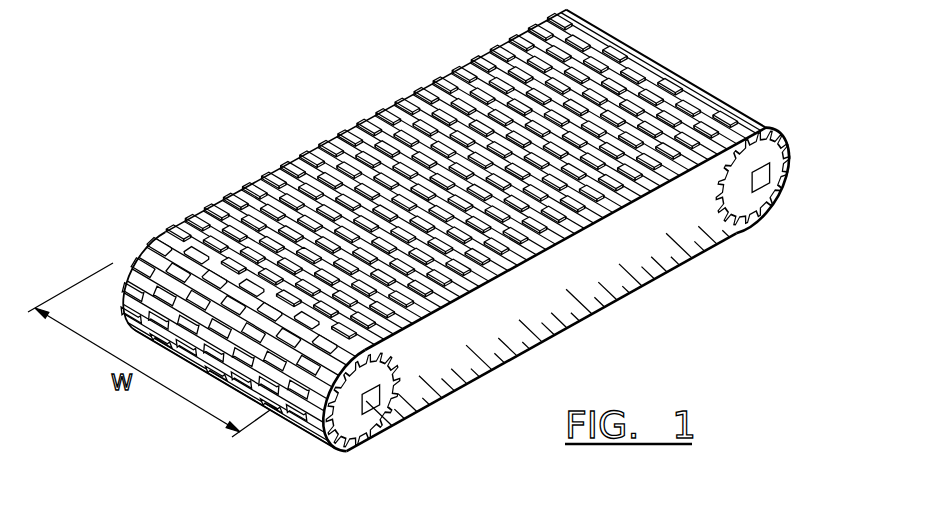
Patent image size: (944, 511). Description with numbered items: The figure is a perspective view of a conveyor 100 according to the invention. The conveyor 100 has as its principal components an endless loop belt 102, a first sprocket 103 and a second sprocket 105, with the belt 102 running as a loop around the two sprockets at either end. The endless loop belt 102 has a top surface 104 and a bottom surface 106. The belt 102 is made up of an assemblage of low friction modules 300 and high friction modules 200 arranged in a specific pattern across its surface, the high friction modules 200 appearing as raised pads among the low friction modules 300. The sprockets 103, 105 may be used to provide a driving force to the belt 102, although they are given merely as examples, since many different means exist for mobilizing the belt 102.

The conveyor 100 is at (236, 149).
The endless loop belt 102 is at (566, 343).
The first sprocket 103 is at (345, 417).
The top surface 104 is at (578, 222).
The second sprocket 105 is at (782, 163).
The bottom surface 106 is at (607, 307).
The high friction modules 200 is at (590, 28).
The low friction modules 300 is at (660, 80).